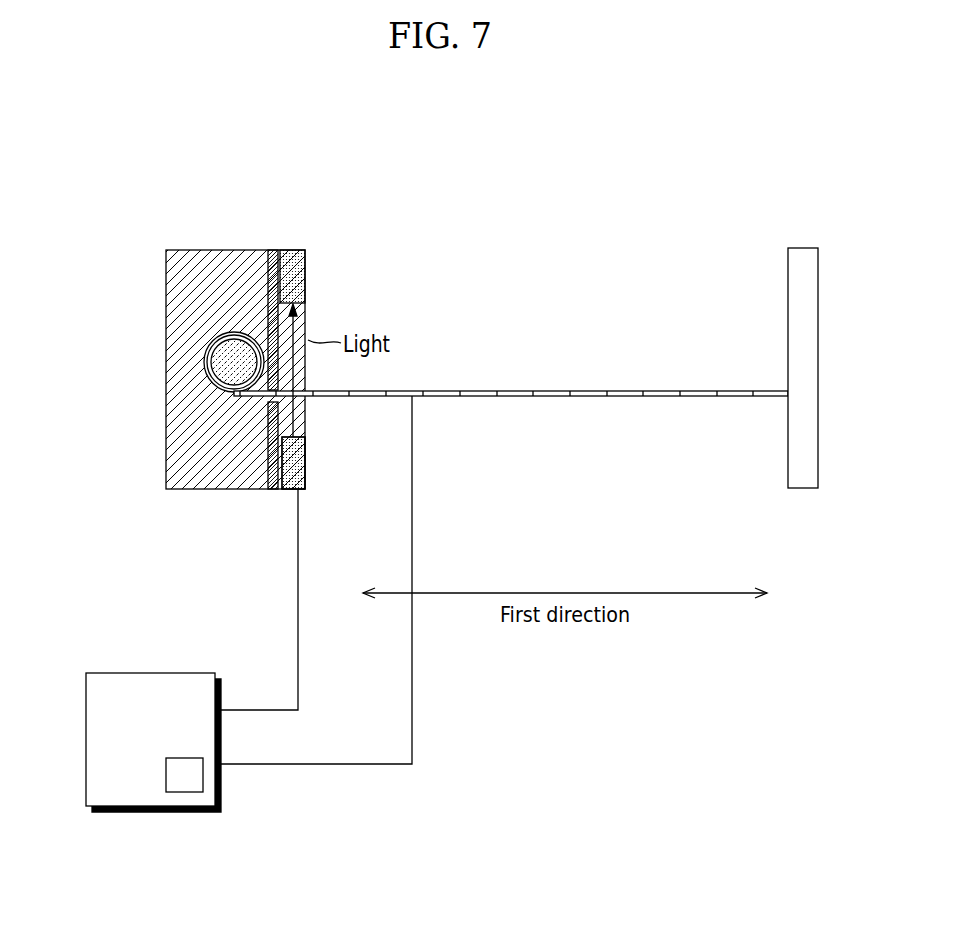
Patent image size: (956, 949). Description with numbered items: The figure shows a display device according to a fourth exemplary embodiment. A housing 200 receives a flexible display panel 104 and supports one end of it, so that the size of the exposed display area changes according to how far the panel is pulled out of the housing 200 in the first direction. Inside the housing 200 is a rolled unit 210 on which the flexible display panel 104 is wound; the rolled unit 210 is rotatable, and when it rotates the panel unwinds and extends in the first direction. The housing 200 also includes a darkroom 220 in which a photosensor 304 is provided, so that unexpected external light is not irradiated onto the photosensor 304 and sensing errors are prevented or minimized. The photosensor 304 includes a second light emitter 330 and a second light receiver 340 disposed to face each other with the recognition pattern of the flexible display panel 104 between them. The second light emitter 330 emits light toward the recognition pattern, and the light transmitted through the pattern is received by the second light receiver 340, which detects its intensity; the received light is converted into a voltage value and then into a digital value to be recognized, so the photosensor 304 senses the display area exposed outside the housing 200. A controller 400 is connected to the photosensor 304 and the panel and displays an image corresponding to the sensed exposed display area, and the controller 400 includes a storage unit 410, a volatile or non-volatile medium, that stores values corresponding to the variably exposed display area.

The flexible display panel 104 is at (634, 389).
The housing 200 is at (190, 282).
The rolled unit 210 is at (227, 365).
The darkroom 220 is at (268, 266).
The photosensor 304 is at (305, 466).
The second light emitter 330 is at (291, 489).
The second light receiver 340 is at (307, 270).
The controller 400 is at (170, 673).
The storage unit 410 is at (185, 792).